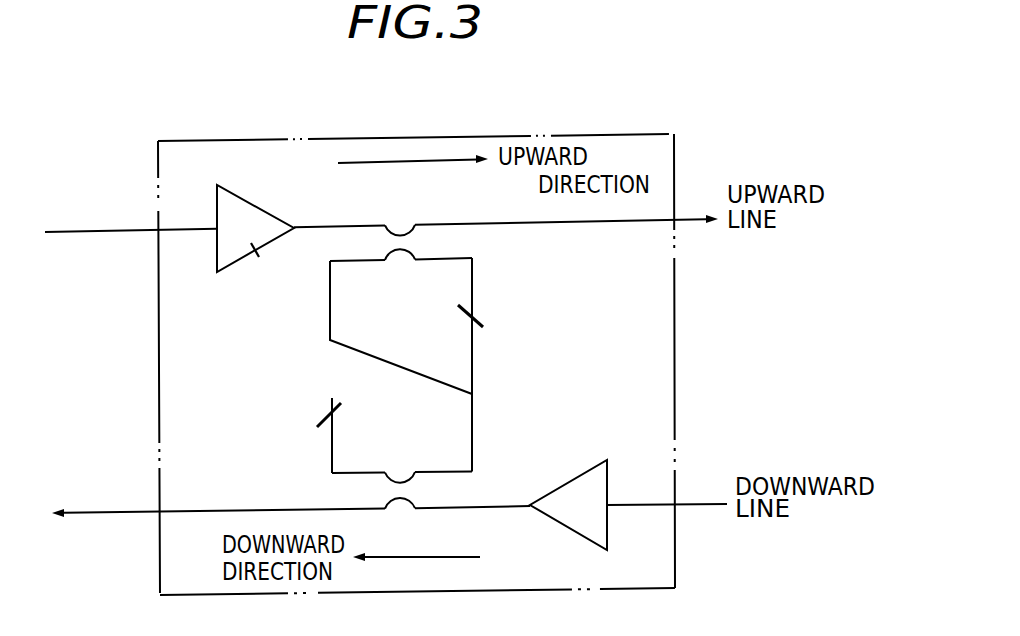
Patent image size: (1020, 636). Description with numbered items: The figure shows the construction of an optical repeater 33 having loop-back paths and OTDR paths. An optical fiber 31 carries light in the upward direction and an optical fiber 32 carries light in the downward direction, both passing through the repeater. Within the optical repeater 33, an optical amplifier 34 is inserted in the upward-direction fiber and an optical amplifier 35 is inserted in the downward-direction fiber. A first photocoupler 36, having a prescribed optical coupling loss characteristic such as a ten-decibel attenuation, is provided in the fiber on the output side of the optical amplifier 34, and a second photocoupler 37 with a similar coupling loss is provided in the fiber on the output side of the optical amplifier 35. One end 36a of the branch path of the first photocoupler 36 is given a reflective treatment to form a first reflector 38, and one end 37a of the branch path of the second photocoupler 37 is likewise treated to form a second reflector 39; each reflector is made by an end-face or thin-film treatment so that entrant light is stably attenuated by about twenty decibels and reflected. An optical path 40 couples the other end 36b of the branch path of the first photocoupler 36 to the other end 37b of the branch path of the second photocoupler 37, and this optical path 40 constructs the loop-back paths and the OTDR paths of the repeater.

The optical fiber in the upward direction 31 is at (110, 232).
The optical fiber in the downward direction 32 is at (102, 515).
The optical repeater 33 is at (190, 148).
The optical amplifier in the upward direction 34 is at (256, 256).
The optical amplifier in the downward direction 35 is at (587, 472).
The first photocoupler 36 is at (402, 220).
The end of a branch path of the first photocoupler 36a is at (442, 260).
The another end of the branch path of the first photocoupler 36b is at (363, 261).
The second photocoupler 37 is at (425, 518).
The end of a branch path of the second photocoupler 37a is at (373, 472).
The another end of the branch path of the second photocoupler 37b is at (450, 474).
The first reflector 38 is at (477, 330).
The second reflector 39 is at (320, 420).
The optical path 40 is at (345, 345).